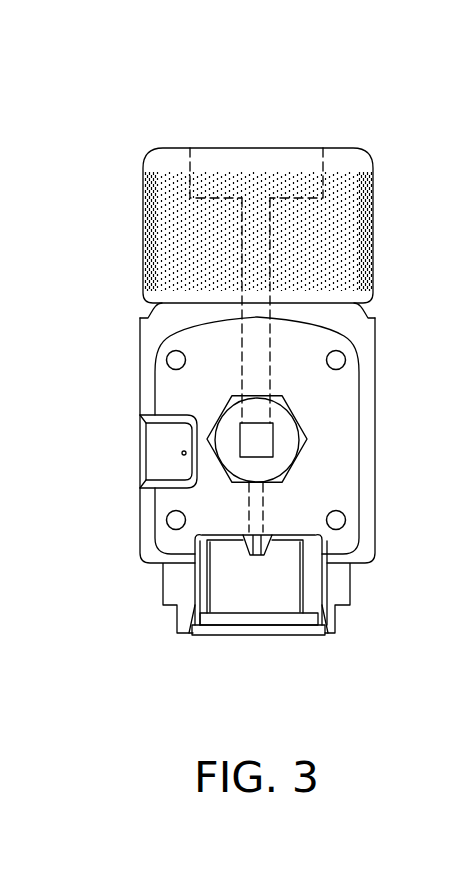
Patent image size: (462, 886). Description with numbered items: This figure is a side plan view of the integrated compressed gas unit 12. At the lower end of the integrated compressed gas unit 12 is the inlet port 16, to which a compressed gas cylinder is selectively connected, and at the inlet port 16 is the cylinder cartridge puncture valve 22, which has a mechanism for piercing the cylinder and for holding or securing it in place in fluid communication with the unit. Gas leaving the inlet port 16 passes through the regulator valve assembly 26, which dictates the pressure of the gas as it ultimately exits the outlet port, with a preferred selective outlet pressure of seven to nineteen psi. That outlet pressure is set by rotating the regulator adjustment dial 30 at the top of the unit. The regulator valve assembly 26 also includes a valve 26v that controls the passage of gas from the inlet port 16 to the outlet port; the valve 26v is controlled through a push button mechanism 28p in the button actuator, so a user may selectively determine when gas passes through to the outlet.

The integrated compressed gas unit 12 is at (153, 104).
The regulator adjustment dial 30 is at (372, 218).
The regulator valve assembly 26 is at (345, 415).
The valve 26v is at (273, 447).
The push button mechanism 28p is at (242, 380).
The inlet port 16 is at (248, 512).
The cylinder cartridge puncture valve 22 is at (262, 540).